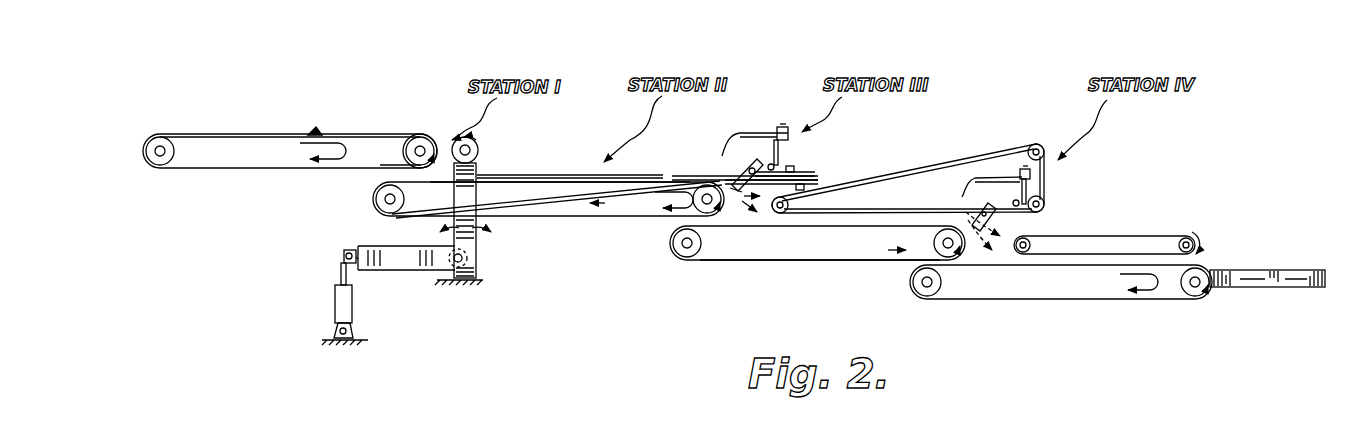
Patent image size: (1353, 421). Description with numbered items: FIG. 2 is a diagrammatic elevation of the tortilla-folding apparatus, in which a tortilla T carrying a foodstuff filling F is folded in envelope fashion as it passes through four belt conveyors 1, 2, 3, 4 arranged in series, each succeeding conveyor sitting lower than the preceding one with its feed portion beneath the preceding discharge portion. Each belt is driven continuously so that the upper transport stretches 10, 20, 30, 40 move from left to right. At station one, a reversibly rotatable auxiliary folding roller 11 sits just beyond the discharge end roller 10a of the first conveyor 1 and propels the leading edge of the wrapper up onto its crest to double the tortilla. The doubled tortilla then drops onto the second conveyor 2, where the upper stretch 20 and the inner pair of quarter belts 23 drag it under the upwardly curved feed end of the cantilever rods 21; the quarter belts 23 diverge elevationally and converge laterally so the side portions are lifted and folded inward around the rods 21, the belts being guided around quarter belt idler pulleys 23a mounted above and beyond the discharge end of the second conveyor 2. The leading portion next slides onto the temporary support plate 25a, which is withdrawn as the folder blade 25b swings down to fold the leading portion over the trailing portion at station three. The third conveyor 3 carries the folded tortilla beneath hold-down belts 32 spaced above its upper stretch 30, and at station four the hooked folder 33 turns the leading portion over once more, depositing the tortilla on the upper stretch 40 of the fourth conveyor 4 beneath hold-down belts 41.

The upper transport stretch 10 is at (200, 134).
The tortilla T is at (247, 136).
The foodstuff filling F is at (318, 128).
The first belt conveyor 1 is at (387, 150).
The discharge end roller 10a is at (419, 146).
The auxiliary folding roller 11 is at (480, 144).
The cantilever rods 21 is at (488, 176).
The second belt conveyor 2 is at (528, 220).
The upper stretch 20 is at (560, 184).
The quarter belts 23 is at (612, 184).
The folder blade 25b is at (722, 146).
The temporary support plate 25a is at (742, 193).
The quarter belt idler pulleys 23a is at (815, 178).
The upper stretch 30 is at (795, 234).
The third belt conveyor 3 is at (826, 264).
The hold-down belts 32 is at (950, 160).
The hooked folder 33 is at (966, 180).
The upper stretch 40 is at (1003, 262).
The hold-down belts 41 is at (1120, 236).
The fourth belt conveyor 4 is at (1038, 305).